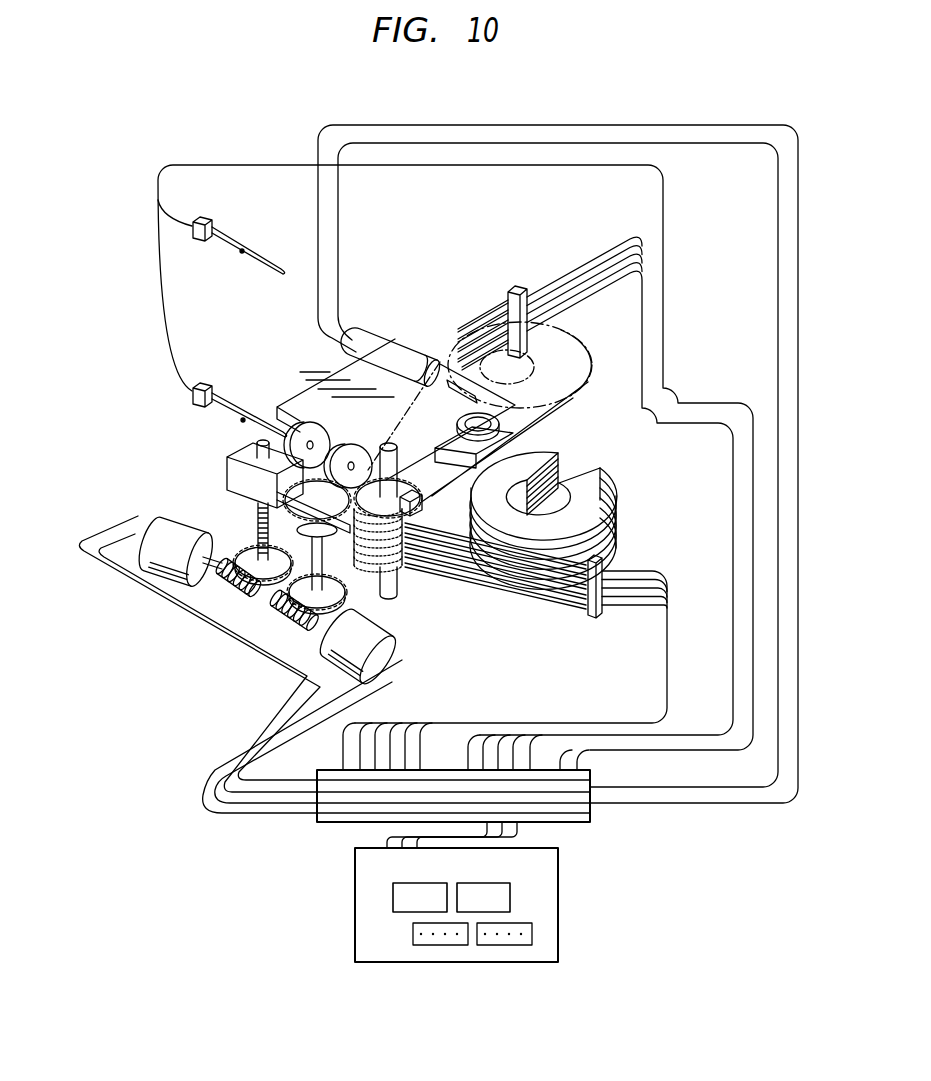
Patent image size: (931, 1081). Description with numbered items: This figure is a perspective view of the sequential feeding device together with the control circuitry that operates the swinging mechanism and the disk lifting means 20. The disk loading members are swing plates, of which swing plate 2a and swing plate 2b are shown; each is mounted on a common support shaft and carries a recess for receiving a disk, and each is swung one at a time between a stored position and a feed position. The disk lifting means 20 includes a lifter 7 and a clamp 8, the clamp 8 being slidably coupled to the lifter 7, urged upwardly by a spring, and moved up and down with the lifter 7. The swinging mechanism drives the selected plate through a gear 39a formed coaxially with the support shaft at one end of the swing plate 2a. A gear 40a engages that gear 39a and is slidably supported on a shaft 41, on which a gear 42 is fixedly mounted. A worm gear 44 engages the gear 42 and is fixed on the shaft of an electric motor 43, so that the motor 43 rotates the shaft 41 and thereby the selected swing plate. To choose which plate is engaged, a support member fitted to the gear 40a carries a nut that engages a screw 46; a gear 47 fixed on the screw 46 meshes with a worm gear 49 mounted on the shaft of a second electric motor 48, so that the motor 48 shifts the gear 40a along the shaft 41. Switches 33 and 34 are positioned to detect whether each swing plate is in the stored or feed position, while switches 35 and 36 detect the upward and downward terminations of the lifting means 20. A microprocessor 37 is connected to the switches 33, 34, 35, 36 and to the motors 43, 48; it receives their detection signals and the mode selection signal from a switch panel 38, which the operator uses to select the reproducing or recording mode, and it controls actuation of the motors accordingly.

The swing plate 2a is at (568, 397).
The swing plate 2b is at (627, 533).
The lifter 7 is at (508, 433).
The clamp 8 is at (456, 418).
The disk lifting means 20 is at (312, 362).
The switch 33 is at (594, 618).
The switch 34 is at (511, 285).
The switch 35 is at (206, 384).
The switch 36 is at (210, 221).
The microprocessor 37 is at (592, 815).
The switch panel 38 is at (559, 862).
The gear 39a is at (418, 507).
The gear 40a is at (250, 495).
The shaft 41 is at (326, 564).
The gear 42 is at (345, 600).
The electric motor 43 is at (393, 650).
The worm gear 44 is at (300, 626).
The screw 46 is at (257, 514).
The gear 47 is at (252, 556).
The electric motor 48 is at (162, 512).
The worm gear 49 is at (232, 590).